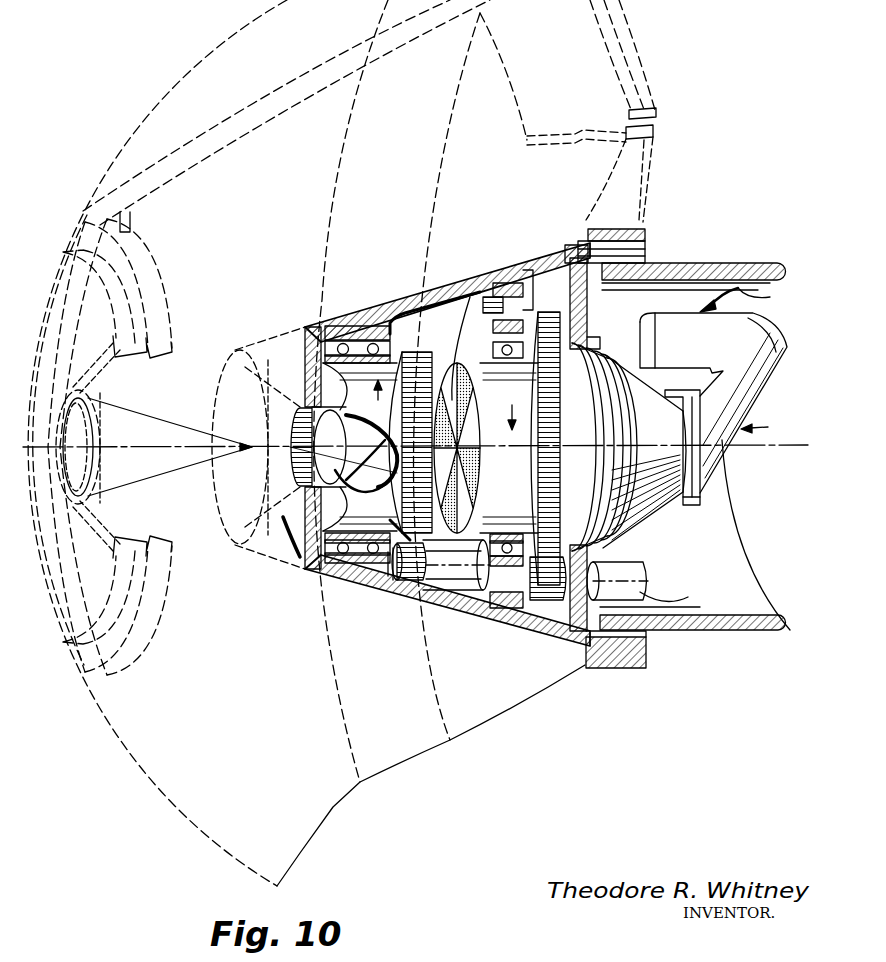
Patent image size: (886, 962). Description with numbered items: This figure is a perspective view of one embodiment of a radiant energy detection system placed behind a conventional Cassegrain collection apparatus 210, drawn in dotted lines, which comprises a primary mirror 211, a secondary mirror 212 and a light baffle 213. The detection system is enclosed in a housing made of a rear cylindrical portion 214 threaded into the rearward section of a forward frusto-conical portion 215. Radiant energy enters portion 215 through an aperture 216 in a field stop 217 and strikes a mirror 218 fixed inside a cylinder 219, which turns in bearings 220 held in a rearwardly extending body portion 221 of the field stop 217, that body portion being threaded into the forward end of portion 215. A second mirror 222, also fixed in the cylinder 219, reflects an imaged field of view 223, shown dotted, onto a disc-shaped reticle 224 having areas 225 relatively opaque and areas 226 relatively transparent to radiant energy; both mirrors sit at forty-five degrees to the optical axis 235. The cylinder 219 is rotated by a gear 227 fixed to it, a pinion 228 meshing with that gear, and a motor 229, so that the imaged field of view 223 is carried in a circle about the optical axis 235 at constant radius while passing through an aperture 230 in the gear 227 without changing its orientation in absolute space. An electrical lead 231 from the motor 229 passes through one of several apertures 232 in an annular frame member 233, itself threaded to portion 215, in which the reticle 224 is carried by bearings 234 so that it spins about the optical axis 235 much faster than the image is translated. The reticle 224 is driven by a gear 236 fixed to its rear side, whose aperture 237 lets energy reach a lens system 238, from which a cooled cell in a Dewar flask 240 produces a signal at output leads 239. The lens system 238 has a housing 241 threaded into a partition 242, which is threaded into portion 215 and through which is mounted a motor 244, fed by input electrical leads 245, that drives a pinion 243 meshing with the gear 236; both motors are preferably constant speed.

The radiant energy collection apparatus 210 is at (640, 33).
The primary mirror 211 is at (515, 130).
The secondary mirror 212 is at (104, 343).
The light baffle 213 is at (153, 441).
The rear cylindrical portion 214 is at (706, 263).
The forward frusto-conical portion 215 is at (500, 267).
The aperture 216 is at (290, 470).
The field stop 217 is at (297, 557).
The mirror 218 is at (385, 430).
The cylinder 219 is at (290, 397).
The bearings 220 is at (347, 320).
The rearwardly extending body portion 221 is at (380, 565).
The second mirror 222 is at (400, 565).
The imaged field of view 223 is at (475, 600).
The disc-shaped reticle 224 is at (528, 447).
The areas relatively opaque to radiant energy 225 is at (433, 360).
The areas relatively transparent to radiant energy 226 is at (478, 410).
The gear 227 is at (392, 300).
The pinion 228 is at (407, 590).
The motor 229 is at (432, 600).
The aperture 230 is at (395, 480).
The electrical lead 231 is at (560, 620).
The apertures 232 is at (472, 287).
The annular frame member 233 is at (512, 612).
The bearings 234 is at (451, 288).
The optical axis 235 is at (181, 435).
The gear 236 is at (605, 343).
The aperture 237 is at (615, 525).
The lens system 238 is at (774, 425).
The output leads 239 is at (755, 297).
The Dewar flask 240 is at (760, 404).
The housing 241 is at (675, 437).
The partition 242 is at (552, 270).
The pinion 243 is at (585, 650).
The motor 244 is at (645, 580).
The input electrical leads 245 is at (673, 597).